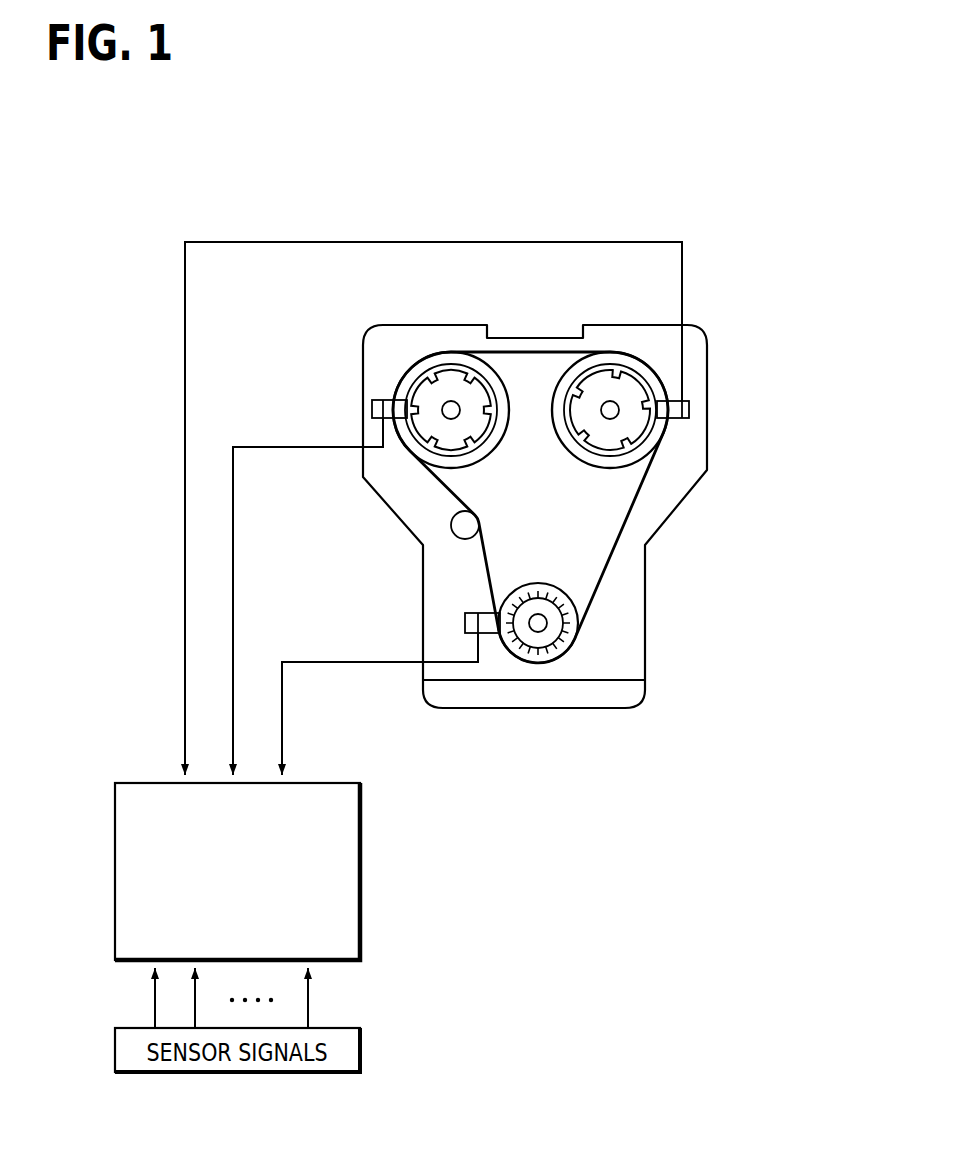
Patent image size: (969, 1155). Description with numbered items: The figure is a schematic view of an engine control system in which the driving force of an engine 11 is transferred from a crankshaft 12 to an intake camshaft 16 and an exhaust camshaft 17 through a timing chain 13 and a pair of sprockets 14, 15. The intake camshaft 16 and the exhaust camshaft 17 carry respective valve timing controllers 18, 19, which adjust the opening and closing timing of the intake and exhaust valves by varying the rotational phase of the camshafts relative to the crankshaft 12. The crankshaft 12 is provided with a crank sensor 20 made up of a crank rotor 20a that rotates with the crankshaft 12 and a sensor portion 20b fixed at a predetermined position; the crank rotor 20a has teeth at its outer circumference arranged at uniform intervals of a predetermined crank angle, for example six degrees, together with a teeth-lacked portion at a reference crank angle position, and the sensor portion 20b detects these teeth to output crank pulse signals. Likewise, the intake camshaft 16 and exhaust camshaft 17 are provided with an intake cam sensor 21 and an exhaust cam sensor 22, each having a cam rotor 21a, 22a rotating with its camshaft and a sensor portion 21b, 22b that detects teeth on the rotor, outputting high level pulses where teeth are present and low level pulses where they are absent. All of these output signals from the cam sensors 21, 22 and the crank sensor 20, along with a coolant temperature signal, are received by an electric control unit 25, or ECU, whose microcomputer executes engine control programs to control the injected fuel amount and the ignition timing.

The engine 11 is at (702, 318).
The crankshaft 12 is at (548, 625).
The timing chain 13 is at (627, 518).
The sprocket 14 is at (627, 362).
The sprocket 15 is at (420, 367).
The intake camshaft 16 is at (610, 400).
The exhaust camshaft 17 is at (452, 400).
The valve timing controller 18 is at (655, 366).
The valve timing controller 19 is at (497, 367).
The crank sensor 20 is at (391, 664).
The crank rotor 20a is at (522, 645).
The sensor portion 20b is at (465, 623).
The intake cam sensor 21 is at (486, 508).
The cam rotor 21a is at (613, 443).
The sensor portion 21b is at (689, 409).
The exhaust cam sensor 22 is at (320, 559).
The cam rotor 22a is at (427, 443).
The sensor portion 22b is at (373, 408).
The electric control unit 25 is at (360, 868).